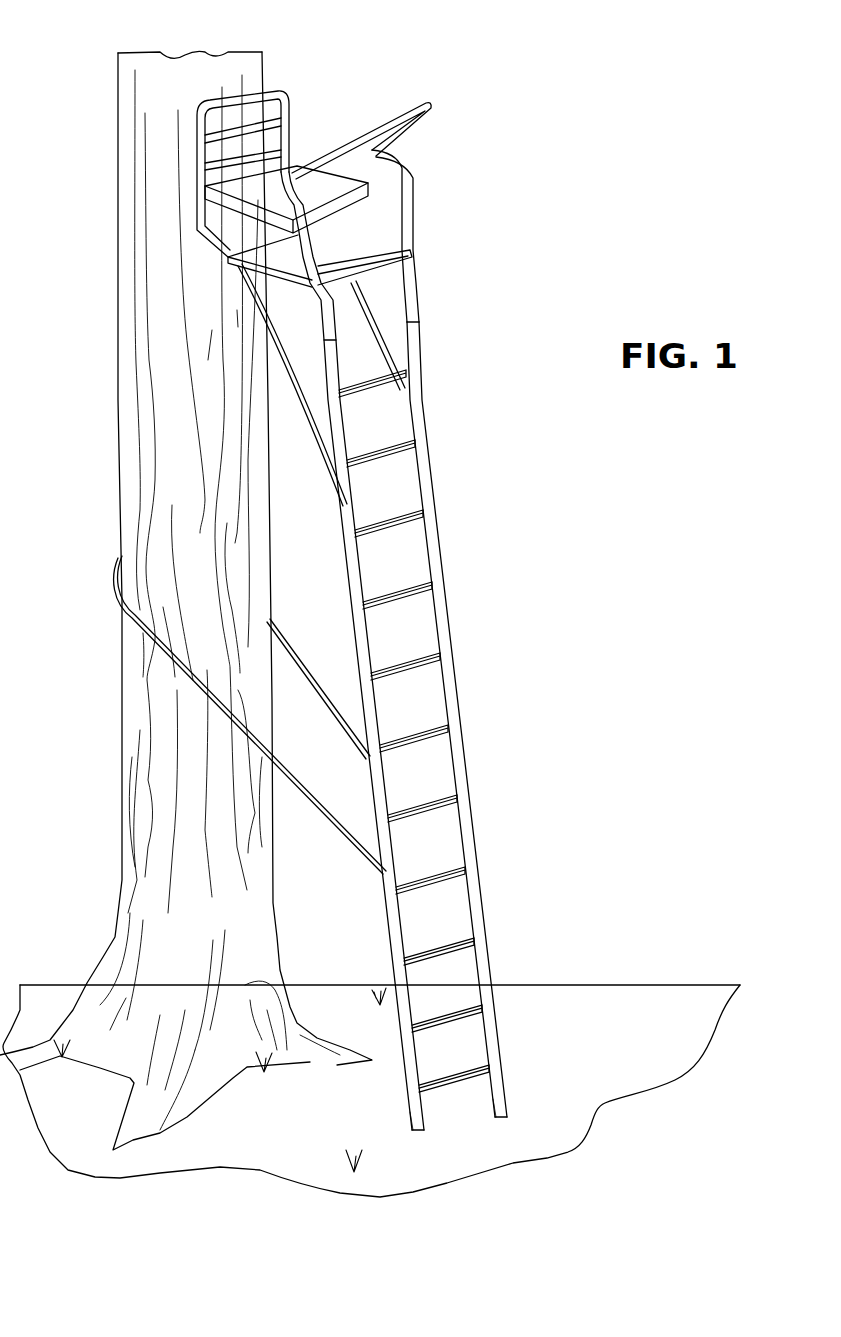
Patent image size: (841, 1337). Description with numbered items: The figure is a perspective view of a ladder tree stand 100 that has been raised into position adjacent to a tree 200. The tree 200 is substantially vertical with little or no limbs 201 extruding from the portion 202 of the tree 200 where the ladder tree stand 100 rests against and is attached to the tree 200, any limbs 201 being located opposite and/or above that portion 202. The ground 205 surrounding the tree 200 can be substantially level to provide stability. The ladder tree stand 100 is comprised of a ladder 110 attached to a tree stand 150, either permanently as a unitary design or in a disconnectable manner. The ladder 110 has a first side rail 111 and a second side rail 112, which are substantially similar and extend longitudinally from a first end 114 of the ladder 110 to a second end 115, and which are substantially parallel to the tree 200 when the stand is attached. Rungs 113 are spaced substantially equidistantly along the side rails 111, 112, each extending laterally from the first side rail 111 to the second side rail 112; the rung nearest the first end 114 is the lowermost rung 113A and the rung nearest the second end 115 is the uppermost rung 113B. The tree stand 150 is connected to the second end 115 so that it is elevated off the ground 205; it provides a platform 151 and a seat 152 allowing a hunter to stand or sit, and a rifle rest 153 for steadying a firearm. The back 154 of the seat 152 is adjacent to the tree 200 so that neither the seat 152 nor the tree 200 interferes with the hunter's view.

The ladder tree stand 100 is at (446, 542).
The ladder 110 is at (467, 772).
The first side rail 111 is at (346, 526).
The second side rail 112 is at (430, 467).
The rungs 113 is at (402, 597).
The lowermost rung 113A is at (472, 1053).
The uppermost rung 113B is at (411, 358).
The first end 114 is at (507, 1113).
The second end 115 is at (413, 330).
The tree stand 150 is at (417, 283).
The platform 151 is at (345, 250).
The seat 152 is at (293, 172).
The rifle rest 153 is at (413, 107).
The back 154 is at (263, 107).
The tree 200 is at (98, 289).
The limbs 201 is at (127, 222).
The portion 202 is at (233, 465).
The ground 205 is at (599, 1043).